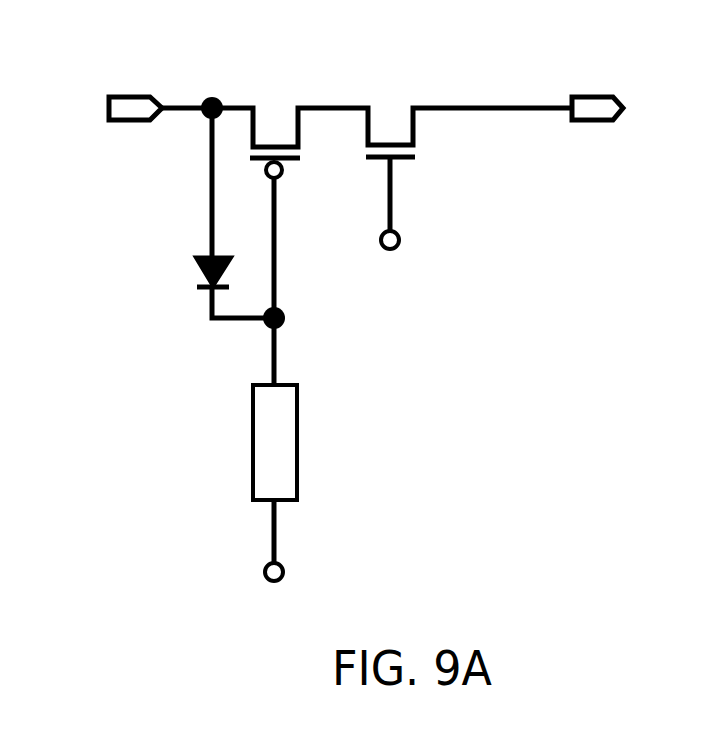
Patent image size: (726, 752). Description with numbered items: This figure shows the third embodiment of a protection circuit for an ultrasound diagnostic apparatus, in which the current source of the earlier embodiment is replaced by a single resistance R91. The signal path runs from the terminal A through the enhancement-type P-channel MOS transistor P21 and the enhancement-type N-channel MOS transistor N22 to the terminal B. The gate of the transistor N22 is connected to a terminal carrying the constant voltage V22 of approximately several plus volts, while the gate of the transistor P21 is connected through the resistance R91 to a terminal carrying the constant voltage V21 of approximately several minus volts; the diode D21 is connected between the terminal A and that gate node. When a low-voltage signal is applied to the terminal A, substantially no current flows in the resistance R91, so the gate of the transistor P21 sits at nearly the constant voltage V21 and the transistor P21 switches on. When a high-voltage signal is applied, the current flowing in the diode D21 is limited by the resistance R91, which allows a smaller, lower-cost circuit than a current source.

The terminal A is at (127, 98).
The terminal B is at (598, 97).
The enhancement-type P-channel MOS transistor P21 is at (280, 115).
The enhancement-type N-channel MOS transistor N22 is at (390, 108).
The constant voltage V22 is at (402, 236).
The constant voltage V21 is at (263, 572).
The diode D21 is at (203, 276).
The resistance R91 is at (252, 447).